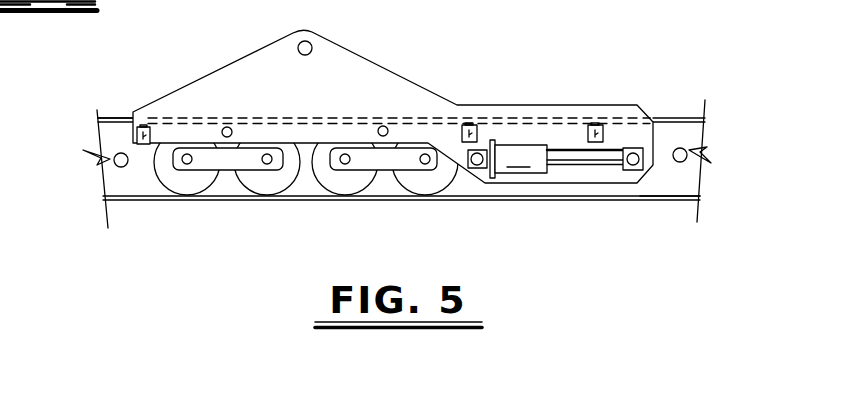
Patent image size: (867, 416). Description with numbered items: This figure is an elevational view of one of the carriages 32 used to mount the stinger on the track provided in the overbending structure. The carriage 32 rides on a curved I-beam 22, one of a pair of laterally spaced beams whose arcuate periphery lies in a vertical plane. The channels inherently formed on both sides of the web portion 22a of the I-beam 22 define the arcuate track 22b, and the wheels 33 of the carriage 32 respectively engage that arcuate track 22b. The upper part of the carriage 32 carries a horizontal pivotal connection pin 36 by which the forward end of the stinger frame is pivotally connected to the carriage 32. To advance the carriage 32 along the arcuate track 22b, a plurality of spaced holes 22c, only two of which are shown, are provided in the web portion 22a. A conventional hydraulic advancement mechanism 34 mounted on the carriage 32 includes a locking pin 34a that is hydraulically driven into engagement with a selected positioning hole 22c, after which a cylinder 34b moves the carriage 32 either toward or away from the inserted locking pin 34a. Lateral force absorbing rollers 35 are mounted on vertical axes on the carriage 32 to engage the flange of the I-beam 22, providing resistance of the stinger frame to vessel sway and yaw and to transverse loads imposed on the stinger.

The curved beam 22 is at (115, 117).
The web portion 22a is at (113, 137).
The arcuate track 22b is at (681, 193).
The spaced hole 22c is at (114, 166).
The carriage 32 is at (324, 97).
The wheel 33 is at (237, 173).
The hydraulic advancement mechanism 34 is at (555, 165).
The locking pin 34a is at (631, 172).
The cylinder 34b is at (519, 152).
The lateral force absorbing roller 35 is at (151, 134).
The horizontal pivotal connection pin 36 is at (309, 42).